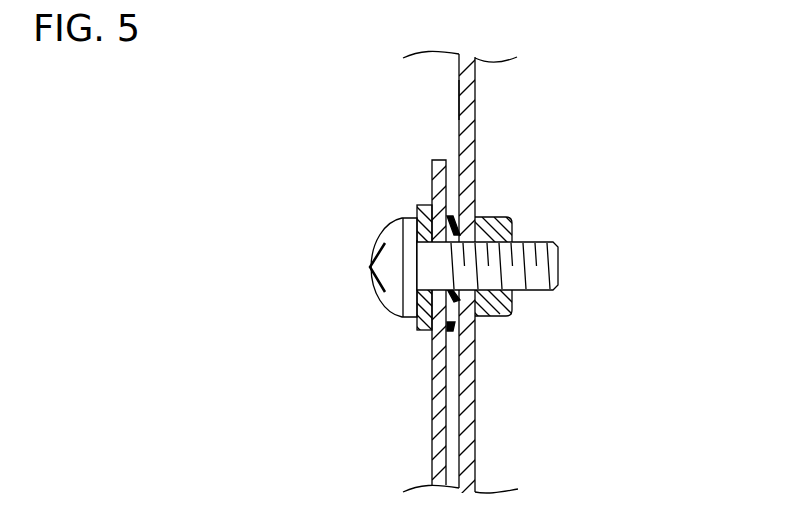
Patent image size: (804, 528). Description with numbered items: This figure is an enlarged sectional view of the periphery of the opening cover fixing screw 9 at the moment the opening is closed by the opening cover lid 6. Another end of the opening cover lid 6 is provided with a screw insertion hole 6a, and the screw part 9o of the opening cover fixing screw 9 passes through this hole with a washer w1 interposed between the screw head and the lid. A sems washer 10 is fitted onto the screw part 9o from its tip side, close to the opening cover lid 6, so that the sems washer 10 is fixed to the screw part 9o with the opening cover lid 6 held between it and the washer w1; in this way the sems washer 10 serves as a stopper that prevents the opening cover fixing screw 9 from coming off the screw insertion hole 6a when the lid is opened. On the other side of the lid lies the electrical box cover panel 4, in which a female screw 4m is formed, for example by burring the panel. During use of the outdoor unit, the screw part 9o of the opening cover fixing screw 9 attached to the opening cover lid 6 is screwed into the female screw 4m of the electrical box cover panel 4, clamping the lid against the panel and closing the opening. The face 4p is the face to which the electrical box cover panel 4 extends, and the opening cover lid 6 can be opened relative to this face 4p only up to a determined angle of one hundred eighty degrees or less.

The electrical box cover panel 4 is at (470, 125).
The face 4p is at (457, 103).
The female screw 4m is at (516, 262).
The opening cover lid 6 is at (440, 373).
The screw insertion hole 6a is at (426, 255).
The opening cover fixing screw 9 is at (443, 261).
The screw part 9o is at (522, 294).
The sems washer 10 is at (455, 197).
The washer w1 is at (427, 331).